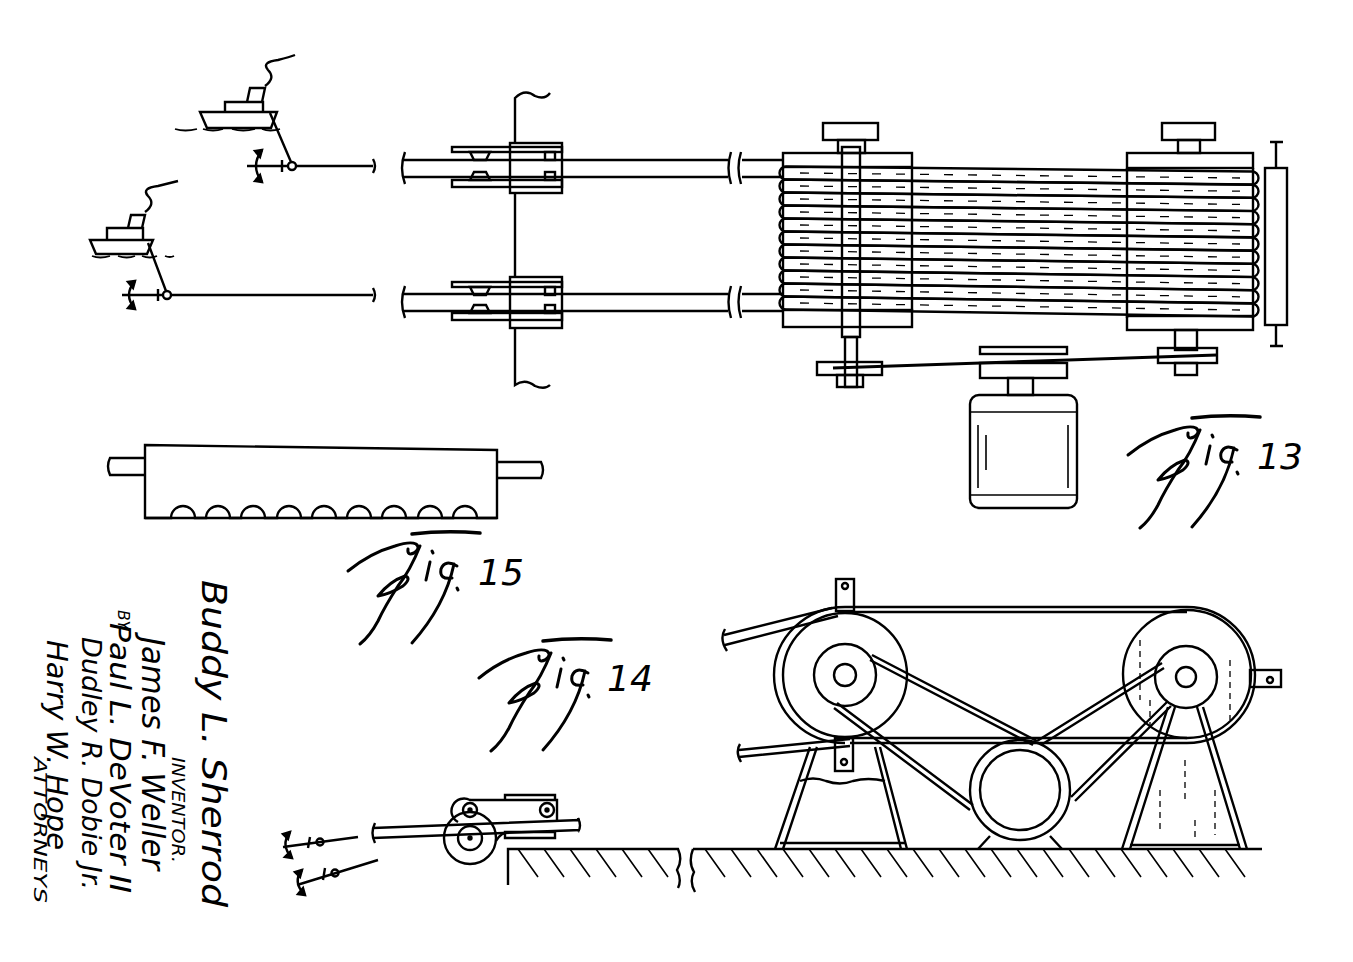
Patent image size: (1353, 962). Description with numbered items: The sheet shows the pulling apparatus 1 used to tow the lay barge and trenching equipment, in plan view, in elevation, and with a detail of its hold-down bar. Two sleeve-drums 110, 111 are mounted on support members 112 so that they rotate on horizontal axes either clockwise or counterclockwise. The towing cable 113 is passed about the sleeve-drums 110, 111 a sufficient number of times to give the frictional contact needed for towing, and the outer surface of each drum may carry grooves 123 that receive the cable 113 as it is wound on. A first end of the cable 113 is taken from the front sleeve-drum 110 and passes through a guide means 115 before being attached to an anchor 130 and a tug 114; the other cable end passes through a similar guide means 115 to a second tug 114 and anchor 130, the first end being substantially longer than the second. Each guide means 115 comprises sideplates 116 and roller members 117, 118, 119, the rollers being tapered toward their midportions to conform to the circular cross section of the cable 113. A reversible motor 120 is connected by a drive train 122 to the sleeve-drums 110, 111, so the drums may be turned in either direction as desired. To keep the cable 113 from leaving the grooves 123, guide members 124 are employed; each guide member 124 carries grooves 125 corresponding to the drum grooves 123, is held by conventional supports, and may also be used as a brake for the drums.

In FIG. 13, the apparatus 1 is at (629, 251).
In FIG. 14, the apparatus 1 is at (1257, 849).
In FIG. 13, the front sleeve-drum 110 is at (890, 155).
In FIG. 14, the front sleeve-drum 110 is at (848, 631).
In FIG. 13, the sleeve-drum 111 is at (1230, 160).
In FIG. 14, the sleeve-drum 111 is at (1195, 635).
In FIG. 14, the support members 112 is at (823, 804).
In FIG. 13, the towing cable 113 is at (637, 160).
In FIG. 14, the towing cable 113 is at (977, 608).
In FIG. 13, the tug 114 is at (272, 110).
In FIG. 13, the guide means 115 is at (478, 147).
In FIG. 14, the guide means 115 is at (472, 797).
In FIG. 14, the sideplates 116 is at (490, 803).
In FIG. 14, the roller member 117 is at (553, 810).
In FIG. 14, the roller member 118 is at (460, 803).
In FIG. 14, the roller member 119 is at (470, 847).
In FIG. 13, the reversible motor 120 is at (990, 435).
In FIG. 14, the reversible motor 120 is at (1014, 817).
In FIG. 13, the drive train 122 is at (1103, 355).
In FIG. 14, the drive train 122 is at (1071, 708).
In FIG. 13, the grooves 123 is at (800, 165).
In FIG. 13, the guide member 124 is at (775, 245).
In FIG. 15, the guide member 124 is at (301, 462).
In FIG. 14, the guide member 124 is at (838, 578).
In FIG. 15, the grooves 125 is at (293, 508).
In FIG. 13, the anchor 130 is at (272, 173).